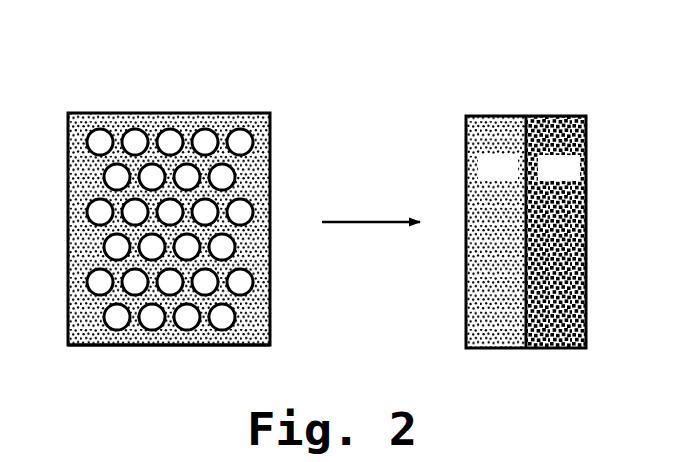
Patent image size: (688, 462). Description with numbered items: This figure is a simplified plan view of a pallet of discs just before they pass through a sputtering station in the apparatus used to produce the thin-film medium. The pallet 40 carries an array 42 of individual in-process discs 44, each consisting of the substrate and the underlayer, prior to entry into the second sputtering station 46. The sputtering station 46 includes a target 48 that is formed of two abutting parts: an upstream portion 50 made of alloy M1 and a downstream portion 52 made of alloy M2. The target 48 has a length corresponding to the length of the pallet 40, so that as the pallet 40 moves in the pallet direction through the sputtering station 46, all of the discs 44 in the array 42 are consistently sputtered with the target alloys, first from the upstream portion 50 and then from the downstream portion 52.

The pallet 40 is at (273, 157).
The array 42 is at (177, 348).
The in-process discs 44 is at (293, 188).
The second sputtering station 46 is at (365, 322).
The target 48 is at (501, 243).
The upstream portion 50 is at (507, 264).
The downstream portion 52 is at (565, 264).